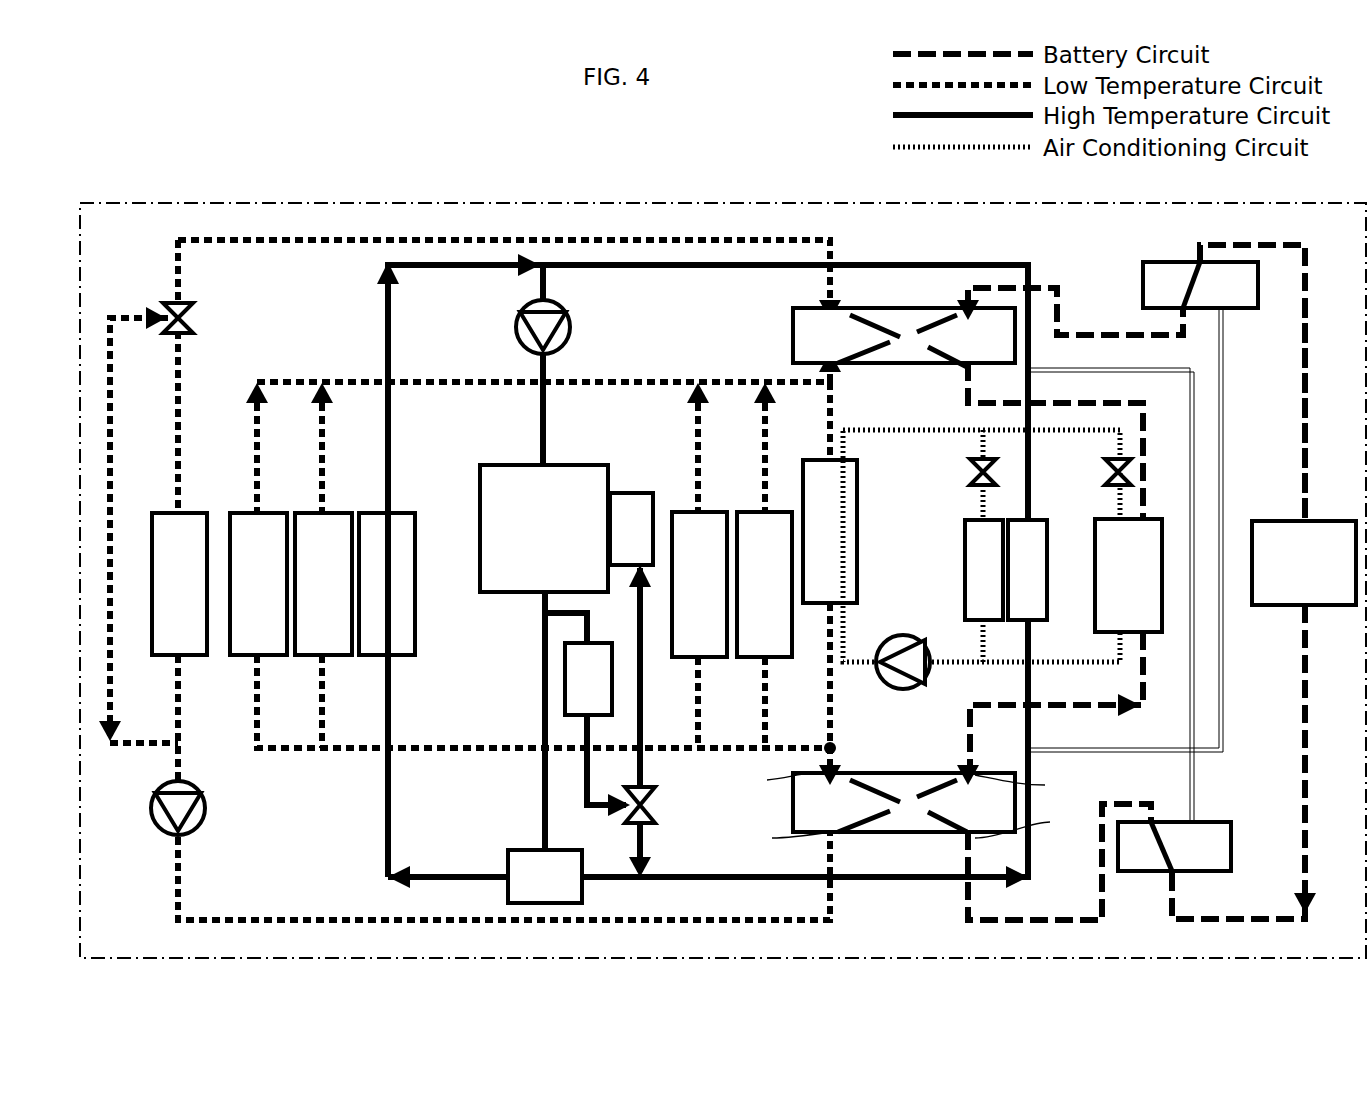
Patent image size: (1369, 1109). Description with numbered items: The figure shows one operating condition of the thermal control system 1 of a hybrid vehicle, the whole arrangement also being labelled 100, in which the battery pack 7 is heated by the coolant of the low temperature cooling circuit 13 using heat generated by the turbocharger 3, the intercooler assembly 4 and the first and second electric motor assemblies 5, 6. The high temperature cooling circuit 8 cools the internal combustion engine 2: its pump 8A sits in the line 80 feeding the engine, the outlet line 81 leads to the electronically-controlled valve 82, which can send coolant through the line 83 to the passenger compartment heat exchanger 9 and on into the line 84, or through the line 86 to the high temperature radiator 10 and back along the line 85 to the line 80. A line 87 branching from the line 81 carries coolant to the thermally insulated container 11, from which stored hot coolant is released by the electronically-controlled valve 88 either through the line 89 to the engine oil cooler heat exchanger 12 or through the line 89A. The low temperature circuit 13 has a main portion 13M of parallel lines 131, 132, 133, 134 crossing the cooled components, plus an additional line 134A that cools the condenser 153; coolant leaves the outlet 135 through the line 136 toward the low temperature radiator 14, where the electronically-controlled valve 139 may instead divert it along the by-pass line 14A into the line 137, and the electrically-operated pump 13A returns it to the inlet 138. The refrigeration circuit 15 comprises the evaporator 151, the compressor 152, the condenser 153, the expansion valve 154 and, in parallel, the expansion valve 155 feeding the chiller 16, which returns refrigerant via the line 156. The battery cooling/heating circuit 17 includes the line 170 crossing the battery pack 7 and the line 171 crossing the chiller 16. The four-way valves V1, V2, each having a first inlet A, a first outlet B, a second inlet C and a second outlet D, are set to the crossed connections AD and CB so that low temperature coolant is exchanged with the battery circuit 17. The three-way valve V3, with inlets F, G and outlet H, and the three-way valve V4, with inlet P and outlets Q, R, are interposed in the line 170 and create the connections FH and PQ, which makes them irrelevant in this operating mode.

The thermal control system 1 is at (190, 158).
The thermal management system 100 is at (328, 200).
The internal combustion engine 2 is at (488, 516).
The turbocharger 3 is at (780, 652).
The intercooler assembly 4 is at (712, 652).
The first electric motor assembly 5 is at (258, 652).
The second electric motor assembly 6 is at (323, 652).
The battery pack 7 is at (1325, 598).
The high temperature cooling circuit 8 is at (1038, 272).
The pump 8A is at (573, 330).
The heat exchanger 9 is at (1050, 560).
The high temperature radiator 10 is at (388, 652).
The thermally insulated container 11 is at (563, 668).
The heat exchanger 12 is at (628, 485).
The low temperature cooling circuit 13 is at (172, 281).
The pump 13A is at (200, 822).
The main portion 13M is at (300, 378).
The low temperature radiator 14 is at (160, 545).
The by-pass line 14A is at (113, 430).
The refrigeration circuit 15 is at (1110, 428).
The chiller 16 is at (1158, 525).
The battery cooling/heating circuit 17 is at (1310, 340).
The line 80 is at (548, 283).
The line 81 is at (542, 688).
The electronically-controlled valve 82 is at (512, 860).
The line 83 is at (930, 880).
The line 84 is at (855, 262).
The line 85 is at (472, 270).
The line 86 is at (392, 718).
The line 87 is at (558, 625).
The electronically-controlled valve 88 is at (650, 805).
The line 89 is at (637, 660).
The line 89A is at (645, 830).
The line 131 is at (320, 420).
The line 132 is at (255, 495).
The line 133 is at (700, 476).
The line 134 is at (768, 476).
The additional line 134A is at (834, 688).
The outlet 135 is at (838, 377).
The line 136 is at (630, 240).
The line 137 is at (176, 718).
The inlet 138 is at (836, 750).
The electronically-controlled valve 139 is at (192, 318).
The evaporator 151 is at (962, 558).
The compressor 152 is at (895, 640).
The condenser 153 is at (858, 515).
The expansion valve 154 is at (968, 478).
The expansion valve 155 is at (1104, 478).
The line 156 is at (1045, 665).
The line 170 is at (1310, 432).
The line 171 is at (1088, 715).
The four-way valve V1 is at (870, 318).
The four-way valve V2 is at (870, 825).
The three-way valve V3 is at (1152, 287).
The three-way valve V4 is at (1225, 848).
The first inlet A is at (830, 363).
The first outlet B is at (830, 308).
The second inlet C is at (966, 383).
The second outlet D is at (965, 300).
The inlet F is at (1183, 320).
The inlet G is at (1223, 310).
The outlet H is at (1198, 260).
The inlet P is at (1175, 875).
The outlet Q is at (1151, 820).
The outlet R is at (1192, 820).